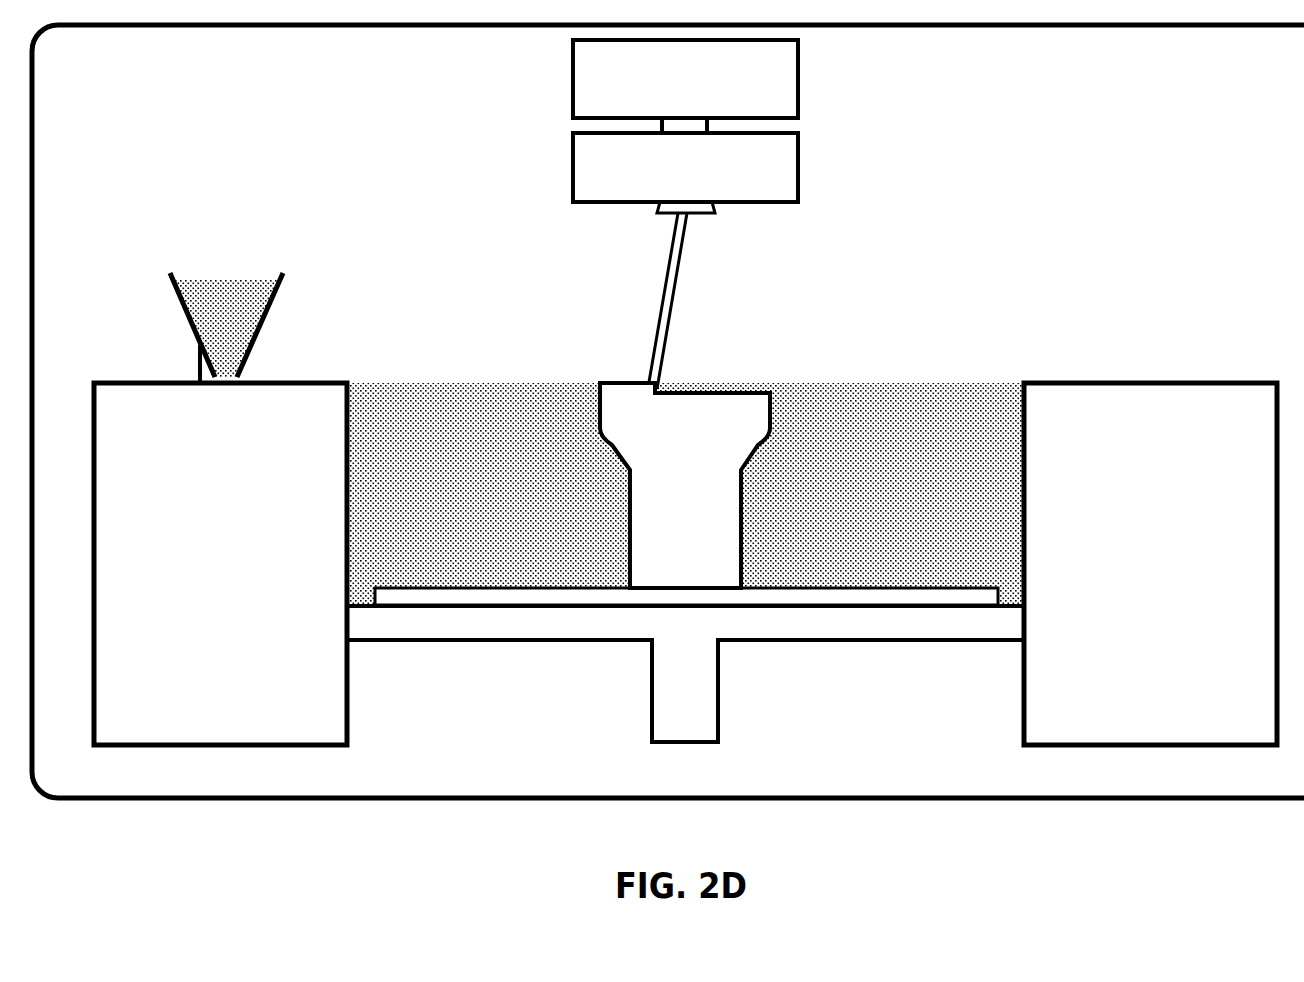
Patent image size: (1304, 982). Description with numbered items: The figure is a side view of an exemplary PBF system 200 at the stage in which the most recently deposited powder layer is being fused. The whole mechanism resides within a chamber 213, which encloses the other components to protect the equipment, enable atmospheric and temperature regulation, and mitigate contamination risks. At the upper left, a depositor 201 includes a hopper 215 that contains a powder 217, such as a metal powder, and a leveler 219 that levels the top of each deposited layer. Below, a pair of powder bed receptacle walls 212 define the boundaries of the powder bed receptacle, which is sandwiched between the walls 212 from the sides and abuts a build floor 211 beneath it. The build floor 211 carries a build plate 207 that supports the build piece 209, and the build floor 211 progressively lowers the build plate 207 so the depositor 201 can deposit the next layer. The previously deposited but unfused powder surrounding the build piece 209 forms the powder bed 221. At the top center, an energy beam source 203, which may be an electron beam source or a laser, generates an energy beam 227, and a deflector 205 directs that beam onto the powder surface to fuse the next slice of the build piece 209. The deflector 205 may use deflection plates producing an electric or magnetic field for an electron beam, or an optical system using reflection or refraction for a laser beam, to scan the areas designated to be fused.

The PBF system 200 is at (668, 453).
The depositor 201 is at (220, 271).
The energy beam source 203 is at (685, 86).
The deflector 205 is at (685, 173).
The build plate 207 is at (964, 582).
The build piece 209 is at (773, 397).
The build floor 211 is at (770, 642).
The powder bed receptacle wall 212 is at (685, 564).
The chamber 213 is at (668, 411).
The hopper 215 is at (265, 322).
The powder 217 is at (220, 307).
The leveler 219 is at (198, 363).
The powder bed 221 is at (962, 410).
The energy beam 227 is at (667, 262).